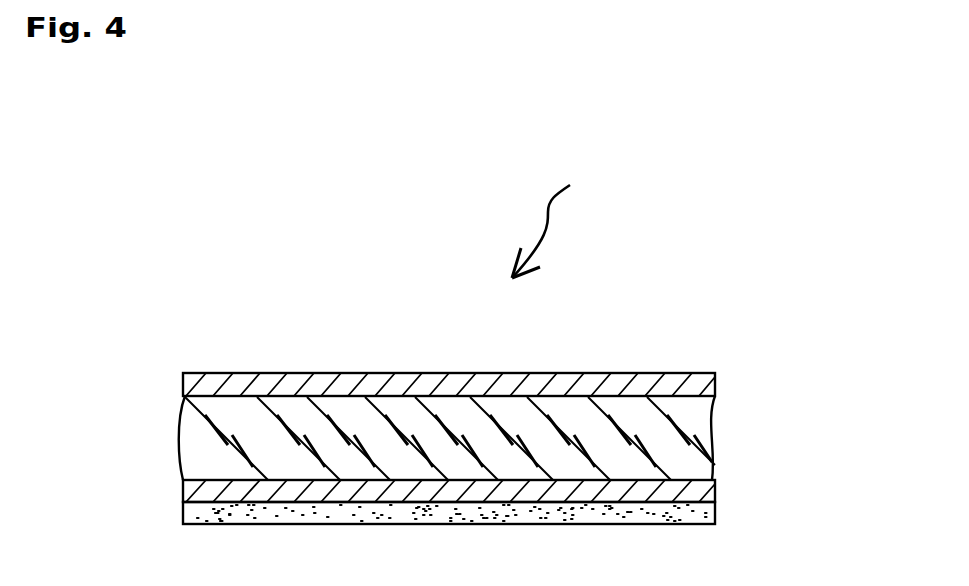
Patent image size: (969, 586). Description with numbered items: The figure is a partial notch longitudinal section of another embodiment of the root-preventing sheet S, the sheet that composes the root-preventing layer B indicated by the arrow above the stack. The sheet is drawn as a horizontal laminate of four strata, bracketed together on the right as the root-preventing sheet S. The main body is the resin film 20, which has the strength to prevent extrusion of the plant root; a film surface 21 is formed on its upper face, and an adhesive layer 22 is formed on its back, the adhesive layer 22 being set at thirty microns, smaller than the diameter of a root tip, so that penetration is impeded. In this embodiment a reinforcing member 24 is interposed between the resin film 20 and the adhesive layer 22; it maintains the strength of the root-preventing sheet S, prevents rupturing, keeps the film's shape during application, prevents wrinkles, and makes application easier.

The film surface 21 is at (715, 384).
The resin film 20 is at (716, 437).
The reinforcing member 24 is at (716, 488).
The adhesive layer 22 is at (498, 529).
The root-preventing sheet S is at (537, 452).
The root-preventing layer B is at (563, 221).